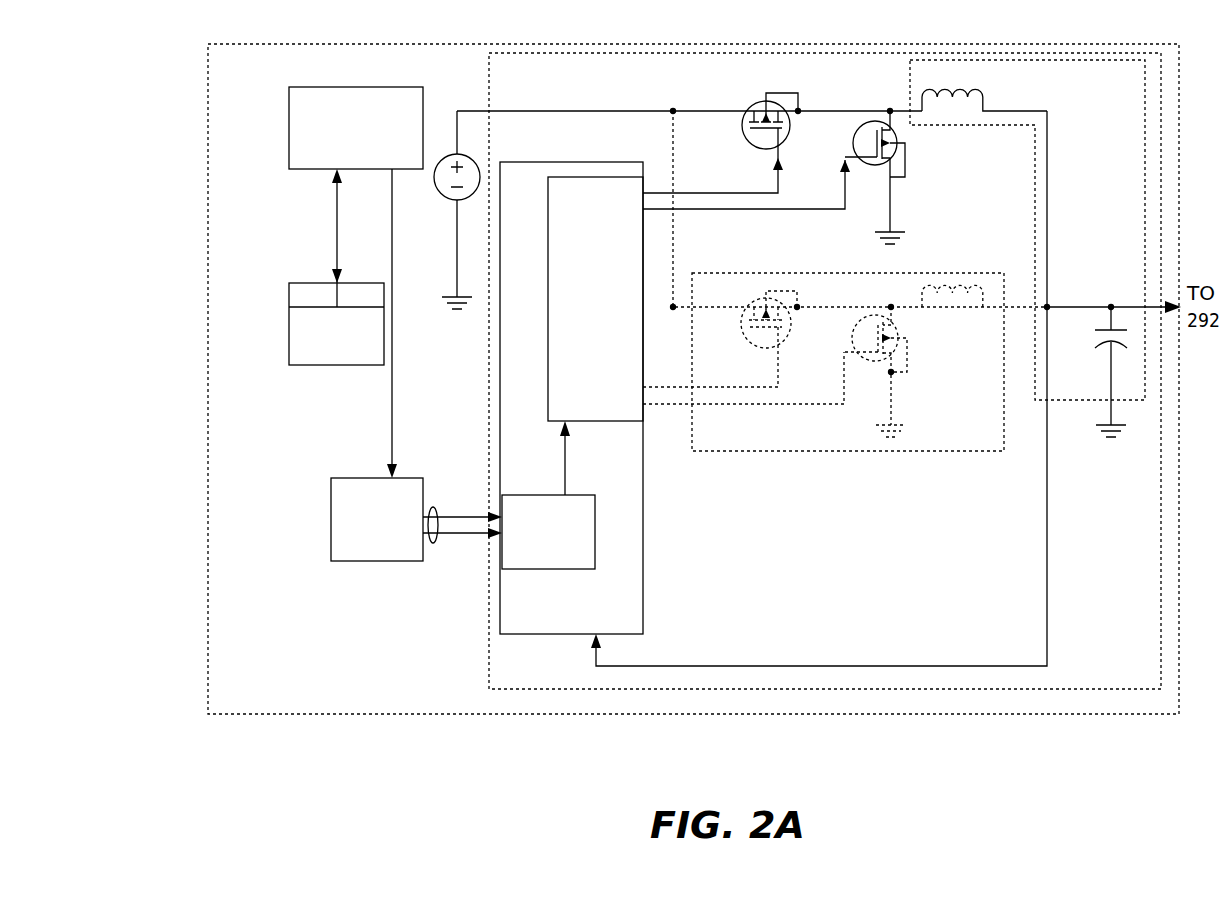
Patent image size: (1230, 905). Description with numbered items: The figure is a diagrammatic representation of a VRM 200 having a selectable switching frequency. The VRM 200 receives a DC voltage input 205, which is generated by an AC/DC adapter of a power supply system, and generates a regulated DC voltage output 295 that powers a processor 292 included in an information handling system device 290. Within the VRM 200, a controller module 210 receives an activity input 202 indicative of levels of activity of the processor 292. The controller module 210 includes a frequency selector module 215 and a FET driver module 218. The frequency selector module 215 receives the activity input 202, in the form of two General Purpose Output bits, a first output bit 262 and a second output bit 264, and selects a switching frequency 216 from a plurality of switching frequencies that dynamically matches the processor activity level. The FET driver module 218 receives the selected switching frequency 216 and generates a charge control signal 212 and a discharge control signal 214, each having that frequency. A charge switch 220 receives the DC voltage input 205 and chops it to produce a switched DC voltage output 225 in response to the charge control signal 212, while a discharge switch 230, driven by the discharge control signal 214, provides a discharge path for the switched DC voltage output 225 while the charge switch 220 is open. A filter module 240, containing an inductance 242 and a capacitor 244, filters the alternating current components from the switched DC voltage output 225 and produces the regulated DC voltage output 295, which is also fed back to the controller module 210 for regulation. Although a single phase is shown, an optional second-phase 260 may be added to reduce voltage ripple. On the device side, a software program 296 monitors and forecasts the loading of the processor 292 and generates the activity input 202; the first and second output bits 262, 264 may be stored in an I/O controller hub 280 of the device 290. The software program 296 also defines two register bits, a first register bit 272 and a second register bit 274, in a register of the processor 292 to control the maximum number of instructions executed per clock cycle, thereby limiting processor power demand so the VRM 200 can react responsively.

The VRM 200 is at (797, 371).
The activity input 202 is at (434, 547).
The DC voltage input 205 is at (550, 110).
The controller module 210 is at (551, 626).
The charge control signal 212 is at (745, 192).
The discharge control signal 214 is at (840, 205).
The frequency selector module 215 is at (532, 541).
The switching frequency 216 is at (566, 458).
The FET driver module 218 is at (583, 311).
The charge switch 220 is at (753, 105).
The switched DC voltage output 225 is at (845, 112).
The discharge switch 230 is at (858, 127).
The filter module 240 is at (1035, 205).
The inductance L 242 is at (978, 86).
The capacitor C 244 is at (1103, 340).
The second-phase 260 is at (720, 452).
The GPO1 262 is at (487, 513).
The GPO2 264 is at (484, 540).
The UREG_B1 272 is at (310, 283).
The UREG_B2 274 is at (360, 283).
The I/O controller hub 280 is at (361, 530).
The information handling system device 290 is at (362, 714).
The processor 292 is at (321, 336).
The regulated DC voltage output 295 is at (1122, 303).
The software program 296 is at (331, 141).